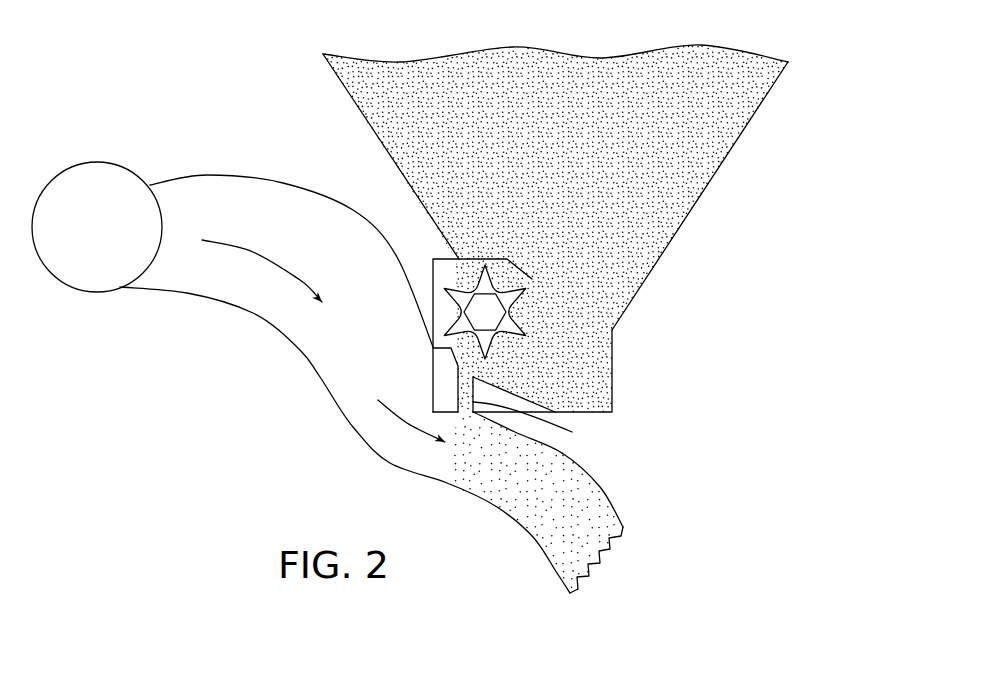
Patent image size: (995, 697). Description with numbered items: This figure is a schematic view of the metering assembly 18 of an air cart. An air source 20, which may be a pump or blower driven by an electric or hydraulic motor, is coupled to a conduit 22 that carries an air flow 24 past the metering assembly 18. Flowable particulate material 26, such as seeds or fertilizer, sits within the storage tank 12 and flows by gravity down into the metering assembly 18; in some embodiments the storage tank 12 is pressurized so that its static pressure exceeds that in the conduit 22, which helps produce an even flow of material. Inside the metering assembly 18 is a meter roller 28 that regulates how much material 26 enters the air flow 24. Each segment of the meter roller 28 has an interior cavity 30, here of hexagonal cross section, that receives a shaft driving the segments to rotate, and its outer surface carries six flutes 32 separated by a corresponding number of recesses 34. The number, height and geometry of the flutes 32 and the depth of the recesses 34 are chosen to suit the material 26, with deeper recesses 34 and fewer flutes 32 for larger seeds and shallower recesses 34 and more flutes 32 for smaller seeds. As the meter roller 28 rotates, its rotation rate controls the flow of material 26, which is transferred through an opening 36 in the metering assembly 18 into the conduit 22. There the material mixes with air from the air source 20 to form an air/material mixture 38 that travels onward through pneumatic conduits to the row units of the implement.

The storage tank 12 is at (348, 90).
The metering assembly 18 is at (422, 255).
The air source 20 is at (97, 162).
The conduit 22 is at (307, 360).
The air flow 24 is at (265, 258).
The flowable particulate material 26 is at (727, 152).
The meter roller 28 is at (532, 310).
The interior cavity 30 is at (475, 328).
The flutes 32 is at (437, 298).
The recesses 34 is at (497, 288).
The opening 36 is at (538, 415).
The air/material mixture 38 is at (528, 508).